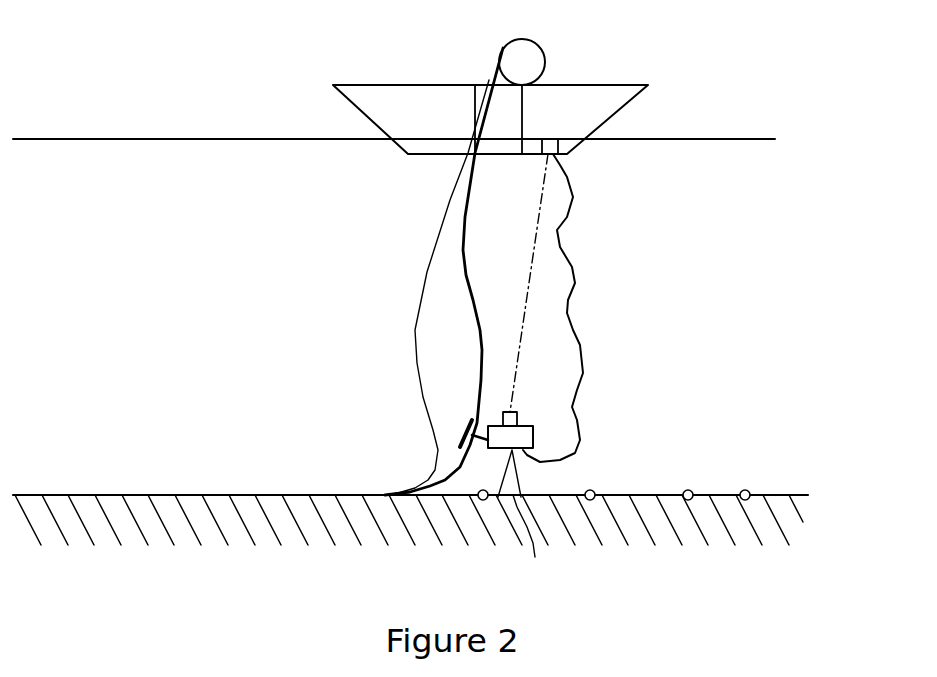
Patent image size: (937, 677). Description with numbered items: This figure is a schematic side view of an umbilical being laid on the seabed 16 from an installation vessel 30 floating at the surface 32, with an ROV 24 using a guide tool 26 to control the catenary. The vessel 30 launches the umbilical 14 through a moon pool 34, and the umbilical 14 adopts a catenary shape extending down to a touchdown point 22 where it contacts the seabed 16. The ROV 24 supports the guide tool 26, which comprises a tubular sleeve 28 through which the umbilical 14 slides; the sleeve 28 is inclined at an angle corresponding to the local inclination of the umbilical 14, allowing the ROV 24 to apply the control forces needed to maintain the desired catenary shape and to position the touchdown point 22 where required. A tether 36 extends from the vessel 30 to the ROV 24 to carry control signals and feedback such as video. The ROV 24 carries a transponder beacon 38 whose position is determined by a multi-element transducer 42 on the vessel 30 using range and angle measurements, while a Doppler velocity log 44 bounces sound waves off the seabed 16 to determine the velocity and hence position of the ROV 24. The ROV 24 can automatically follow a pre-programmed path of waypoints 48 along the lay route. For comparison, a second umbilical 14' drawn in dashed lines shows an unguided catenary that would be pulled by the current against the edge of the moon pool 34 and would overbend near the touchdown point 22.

The umbilical 14 is at (433, 271).
The second umbilical 14' is at (417, 287).
The seabed 16 is at (123, 495).
The touchdown point 22 is at (367, 495).
The ROV 24 is at (522, 437).
The guide tool 26 is at (448, 419).
The tubular sleeve 28 is at (465, 440).
The installation vessel 30 is at (417, 84).
The surface 32 is at (190, 139).
The moon pool 34 is at (523, 108).
The tether 36 is at (567, 310).
The transponder beacon 38 is at (513, 412).
The multi-element transducer 42 is at (555, 143).
The Doppler velocity log 44 is at (536, 541).
The waypoints 48 is at (597, 490).